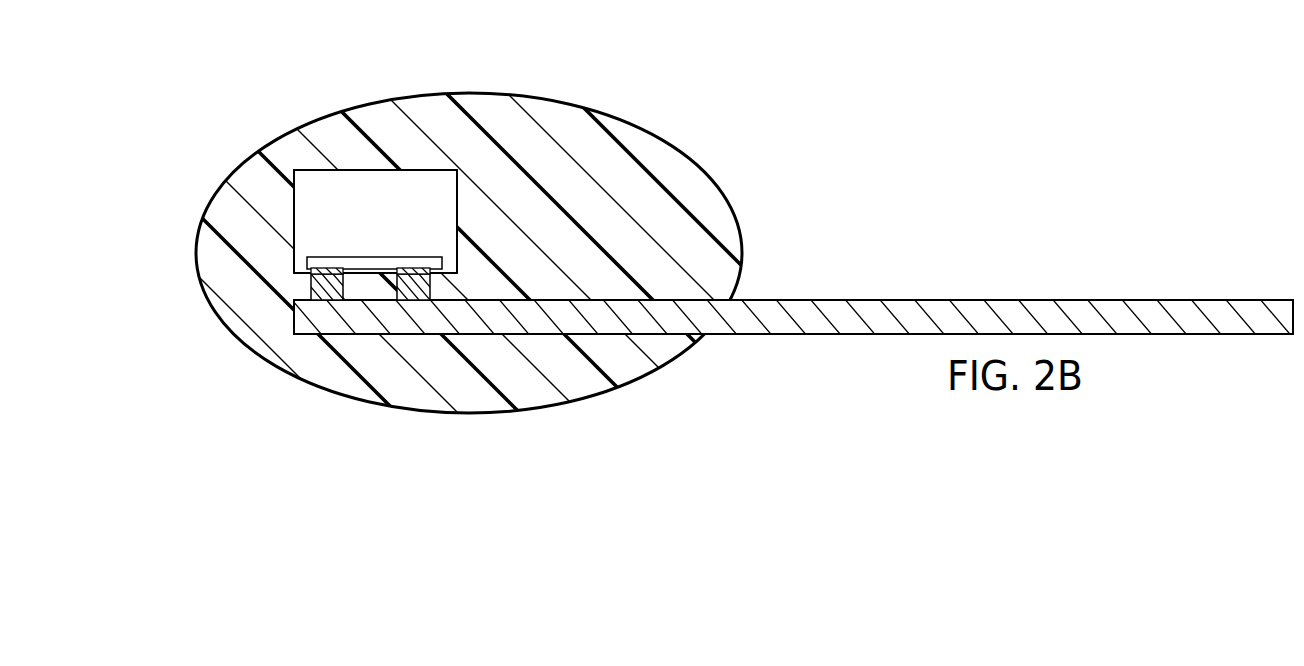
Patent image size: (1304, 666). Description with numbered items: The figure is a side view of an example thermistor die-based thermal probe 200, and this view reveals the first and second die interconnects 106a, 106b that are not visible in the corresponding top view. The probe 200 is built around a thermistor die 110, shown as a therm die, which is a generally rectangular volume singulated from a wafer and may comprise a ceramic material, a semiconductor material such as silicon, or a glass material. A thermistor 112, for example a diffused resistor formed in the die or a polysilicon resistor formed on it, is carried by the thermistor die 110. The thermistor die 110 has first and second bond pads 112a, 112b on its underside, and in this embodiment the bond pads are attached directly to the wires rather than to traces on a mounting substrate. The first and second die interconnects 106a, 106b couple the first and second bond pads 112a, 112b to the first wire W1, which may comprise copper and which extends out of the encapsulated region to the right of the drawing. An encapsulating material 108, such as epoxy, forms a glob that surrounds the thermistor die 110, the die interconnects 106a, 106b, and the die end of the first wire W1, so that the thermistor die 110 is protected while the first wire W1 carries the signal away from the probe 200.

The thermistor die-based thermal probe 200 is at (646, 249).
The encapsulating material 108 is at (555, 110).
The thermistor die 110 is at (315, 180).
The thermistor 112 is at (313, 256).
The first bond pad 112a is at (327, 267).
The second bond pad 112b is at (413, 267).
The first die interconnect 106a is at (318, 292).
The second die interconnect 106b is at (407, 293).
The first wire W1 is at (1107, 300).